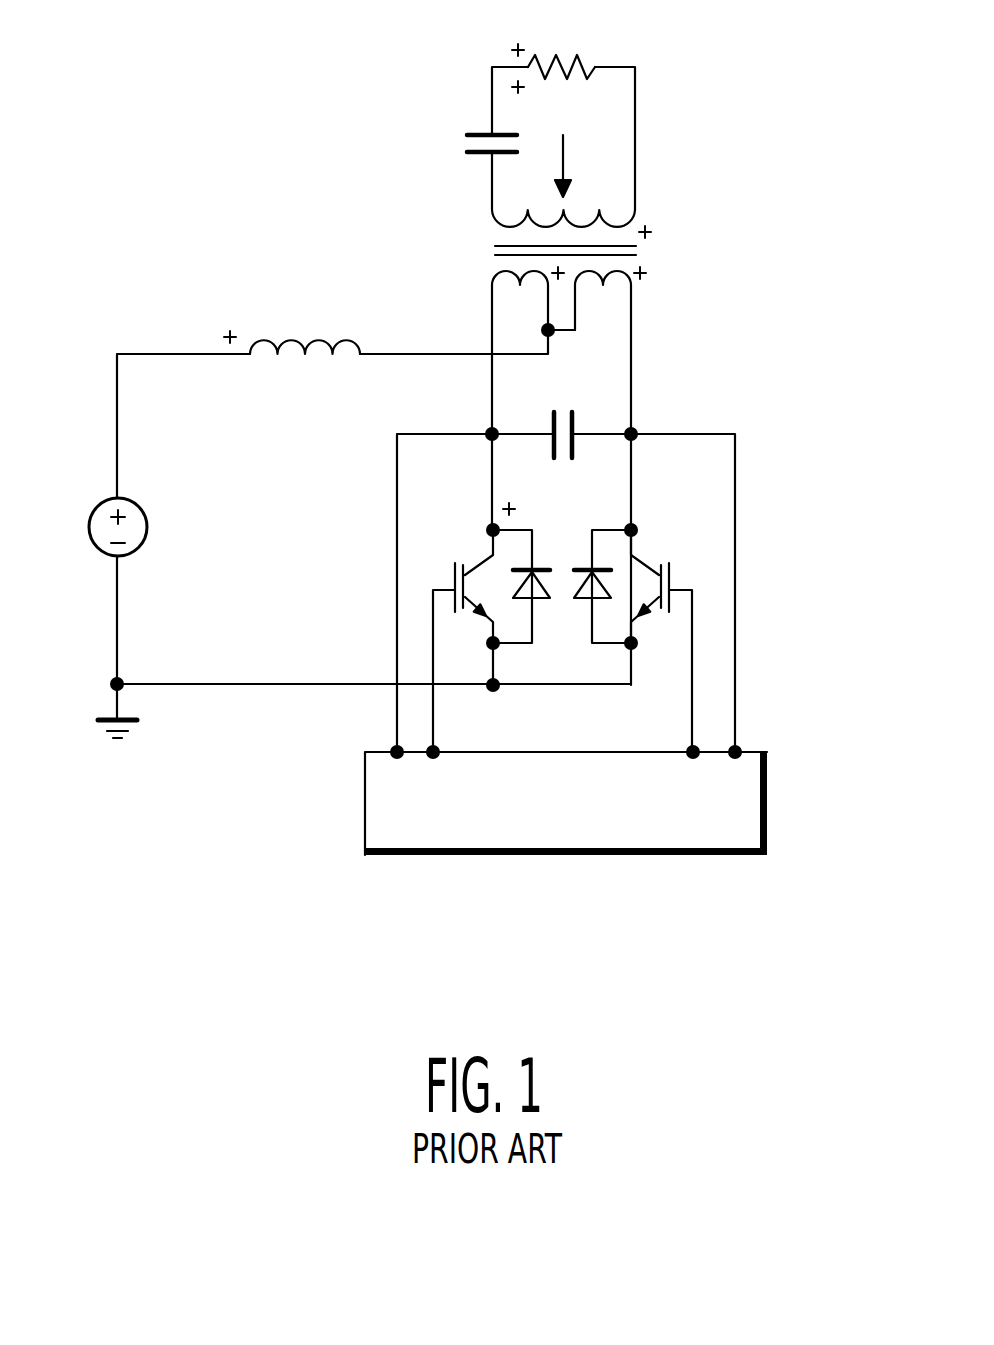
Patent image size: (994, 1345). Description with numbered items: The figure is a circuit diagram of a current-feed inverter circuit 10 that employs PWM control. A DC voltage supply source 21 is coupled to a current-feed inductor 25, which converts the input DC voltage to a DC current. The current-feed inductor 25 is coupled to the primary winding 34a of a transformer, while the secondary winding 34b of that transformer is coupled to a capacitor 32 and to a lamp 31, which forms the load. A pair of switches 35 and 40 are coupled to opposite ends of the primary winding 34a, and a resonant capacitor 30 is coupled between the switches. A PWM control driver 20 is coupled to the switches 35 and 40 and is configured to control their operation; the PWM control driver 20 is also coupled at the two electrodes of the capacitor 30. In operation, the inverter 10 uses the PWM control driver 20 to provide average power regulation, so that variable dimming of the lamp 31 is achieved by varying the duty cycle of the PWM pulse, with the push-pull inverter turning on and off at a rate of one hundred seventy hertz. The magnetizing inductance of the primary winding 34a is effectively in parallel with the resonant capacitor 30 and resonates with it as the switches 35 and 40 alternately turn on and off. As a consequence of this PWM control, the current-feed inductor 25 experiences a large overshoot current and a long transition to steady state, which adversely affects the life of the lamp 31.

The current-feed inverter circuit 10 is at (150, 792).
The PWM control driver 20 is at (768, 803).
The DC voltage supply source 21 is at (90, 510).
The current-feed inductor 25 is at (270, 338).
The resonant capacitor 30 is at (578, 420).
The lamp 31 is at (590, 63).
The capacitor 32 is at (488, 131).
The primary winding 34a is at (633, 290).
The secondary winding 34b is at (636, 215).
The switch 35 is at (488, 558).
The switch 40 is at (642, 558).